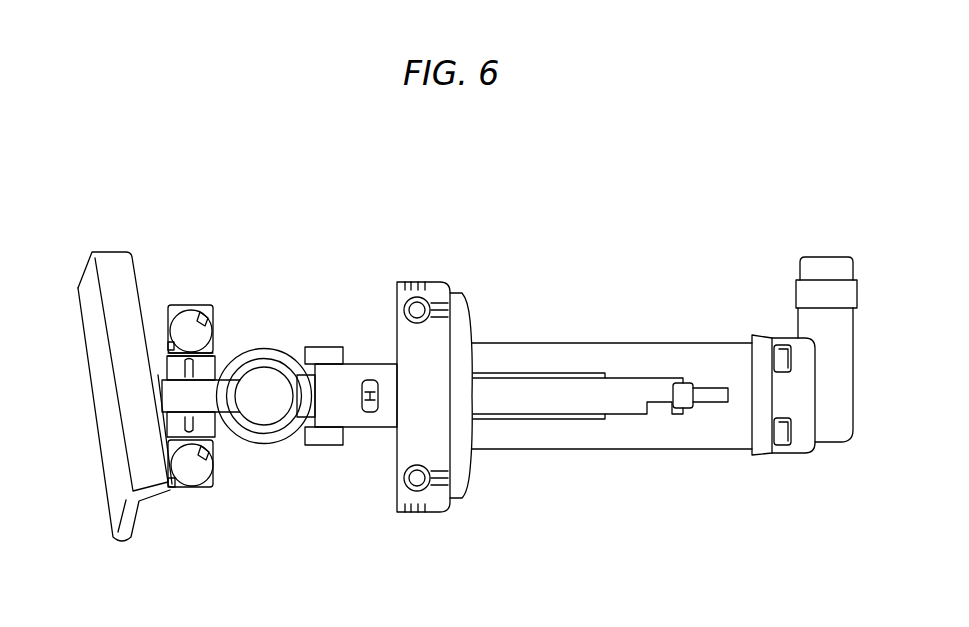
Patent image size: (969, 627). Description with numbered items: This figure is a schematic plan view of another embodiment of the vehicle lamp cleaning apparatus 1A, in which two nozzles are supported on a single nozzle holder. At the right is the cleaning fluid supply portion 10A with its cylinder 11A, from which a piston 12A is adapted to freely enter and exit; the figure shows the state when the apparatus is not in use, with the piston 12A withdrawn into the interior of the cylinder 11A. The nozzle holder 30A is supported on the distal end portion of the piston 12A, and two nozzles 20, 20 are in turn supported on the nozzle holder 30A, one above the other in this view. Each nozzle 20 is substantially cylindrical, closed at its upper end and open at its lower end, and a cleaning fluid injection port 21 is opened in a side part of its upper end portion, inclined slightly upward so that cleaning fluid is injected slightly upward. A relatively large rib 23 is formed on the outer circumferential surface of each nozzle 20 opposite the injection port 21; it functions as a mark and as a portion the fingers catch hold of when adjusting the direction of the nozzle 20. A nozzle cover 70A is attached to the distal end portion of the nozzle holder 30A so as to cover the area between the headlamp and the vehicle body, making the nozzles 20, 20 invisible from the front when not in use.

The vehicle lamp cleaning apparatus 1A is at (432, 220).
The cleaning fluid supply portion 10A is at (681, 321).
The cylinder 11A is at (600, 343).
The piston 12A is at (305, 350).
The nozzle holder 30A is at (226, 347).
The nozzle 20 is at (180, 306).
The cleaning fluid injection port 21 is at (207, 307).
The rib 23 is at (168, 347).
The nozzle cover 70A is at (113, 461).